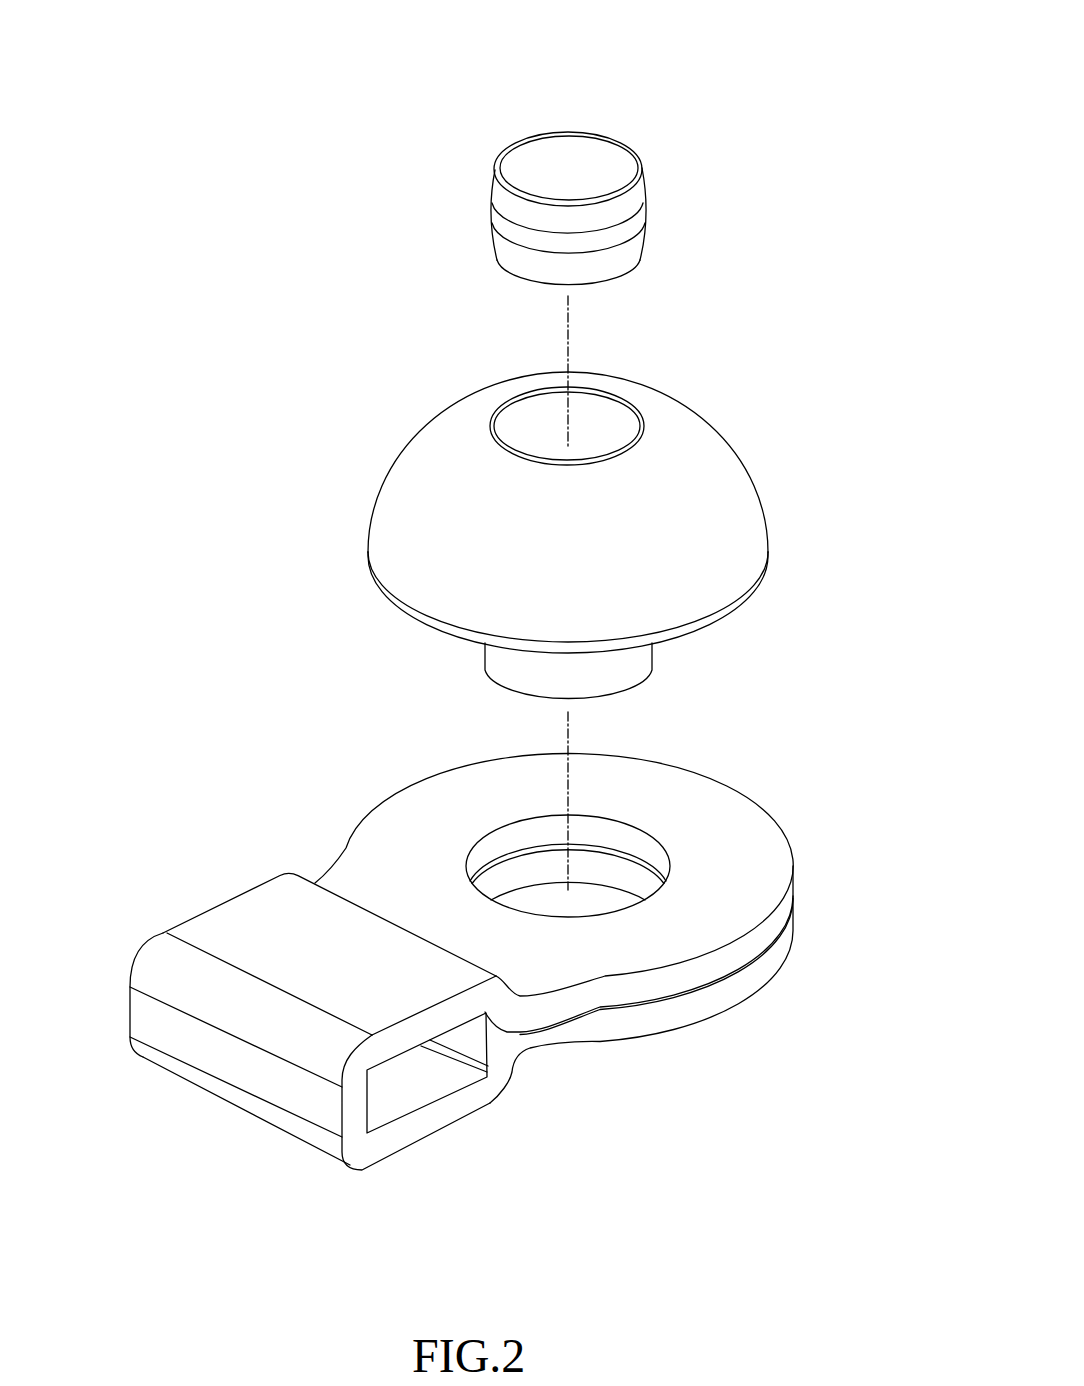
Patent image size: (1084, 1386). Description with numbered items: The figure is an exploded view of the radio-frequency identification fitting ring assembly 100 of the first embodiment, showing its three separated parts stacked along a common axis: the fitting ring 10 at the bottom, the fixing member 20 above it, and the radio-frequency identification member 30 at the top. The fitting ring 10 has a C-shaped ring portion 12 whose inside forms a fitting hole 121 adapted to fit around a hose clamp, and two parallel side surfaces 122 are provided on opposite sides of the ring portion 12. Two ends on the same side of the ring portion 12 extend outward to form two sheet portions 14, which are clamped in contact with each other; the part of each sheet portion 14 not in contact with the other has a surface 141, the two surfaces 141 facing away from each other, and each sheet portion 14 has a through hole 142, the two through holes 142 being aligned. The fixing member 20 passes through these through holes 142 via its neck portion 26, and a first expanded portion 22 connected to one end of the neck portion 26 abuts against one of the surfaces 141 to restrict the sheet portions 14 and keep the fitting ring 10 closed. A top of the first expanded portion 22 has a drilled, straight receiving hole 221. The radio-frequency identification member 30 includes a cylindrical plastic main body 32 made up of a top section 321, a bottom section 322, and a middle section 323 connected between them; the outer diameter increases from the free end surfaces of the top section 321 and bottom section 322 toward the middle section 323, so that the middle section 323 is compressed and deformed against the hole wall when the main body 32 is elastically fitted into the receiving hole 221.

The radio-frequency identification fitting ring assembly 100 is at (337, 202).
The fitting ring 10 is at (215, 812).
The ring portion 12 is at (190, 1045).
The fitting hole 121 is at (410, 1077).
The side surface 122 is at (247, 945).
The sheet portion 14 is at (723, 957).
The surface 141 is at (410, 820).
The through hole 142 is at (628, 828).
The fixing member 20 is at (776, 496).
The first expanded portion 22 is at (418, 508).
The receiving hole 221 is at (583, 393).
The neck portion 26 is at (614, 667).
The radio-frequency identification member 30 is at (527, 117).
The main body 32 is at (497, 162).
The top section 321 is at (630, 202).
The bottom section 322 is at (617, 256).
The middle section 323 is at (638, 225).